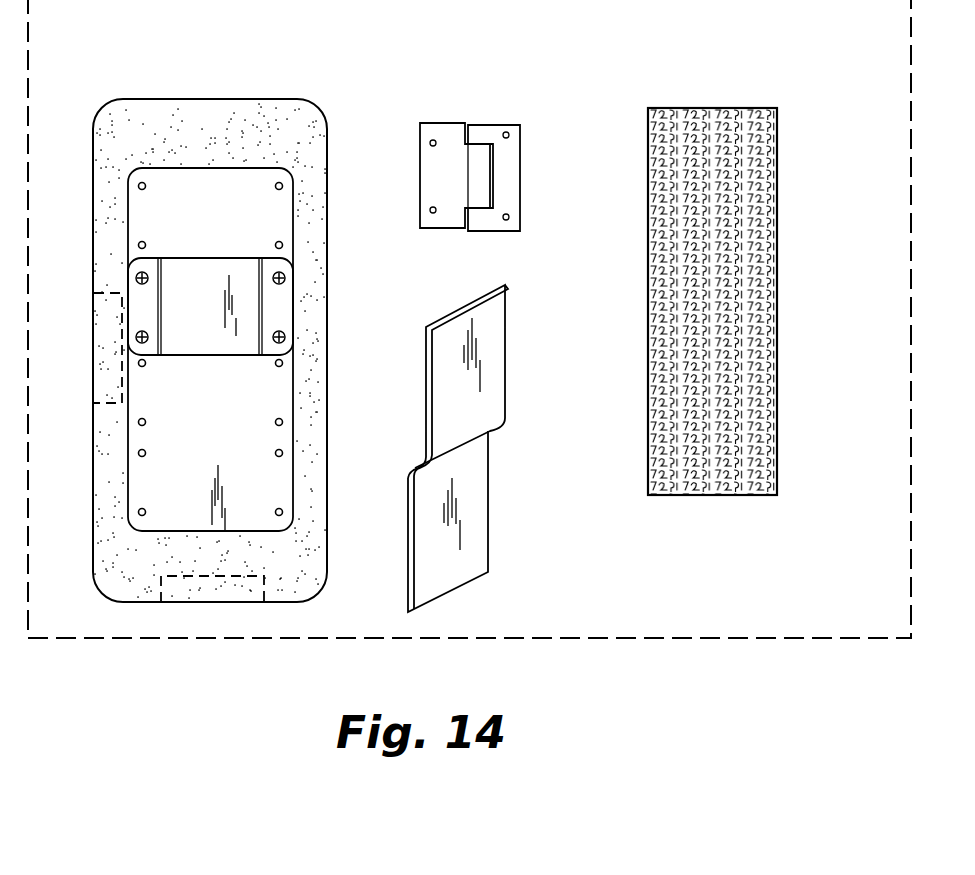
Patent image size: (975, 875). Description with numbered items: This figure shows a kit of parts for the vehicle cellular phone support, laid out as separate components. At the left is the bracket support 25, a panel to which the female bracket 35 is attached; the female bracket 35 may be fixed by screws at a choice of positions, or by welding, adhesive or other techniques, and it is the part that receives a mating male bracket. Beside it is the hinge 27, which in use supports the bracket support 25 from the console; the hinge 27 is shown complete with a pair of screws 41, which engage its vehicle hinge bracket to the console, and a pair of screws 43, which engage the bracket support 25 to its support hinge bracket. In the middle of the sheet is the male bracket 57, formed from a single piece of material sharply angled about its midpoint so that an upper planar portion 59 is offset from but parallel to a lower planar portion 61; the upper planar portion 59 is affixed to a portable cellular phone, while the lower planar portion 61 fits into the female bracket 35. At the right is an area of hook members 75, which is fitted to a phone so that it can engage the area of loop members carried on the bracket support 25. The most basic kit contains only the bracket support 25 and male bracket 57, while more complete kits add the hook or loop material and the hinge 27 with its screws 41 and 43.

The bracket support 25 is at (252, 99).
The hinge 27 is at (476, 112).
The female bracket 35 is at (206, 318).
The screws 41 is at (429, 207).
The screws 43 is at (510, 214).
The male bracket 57 is at (514, 453).
The upper planar portion 59 is at (497, 384).
The lower planar portion 61 is at (473, 515).
The area of hook members 75 is at (752, 275).